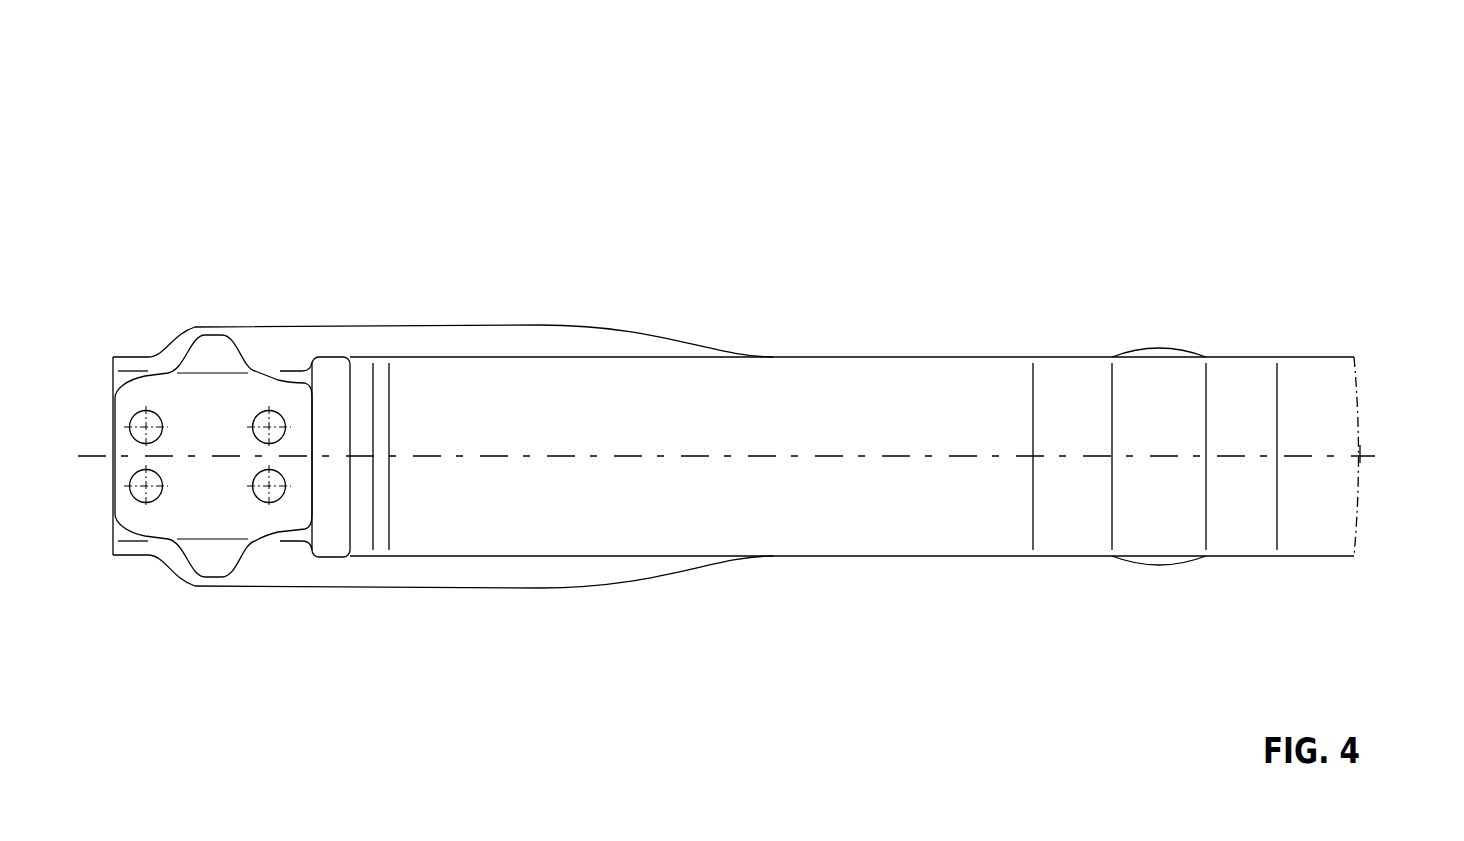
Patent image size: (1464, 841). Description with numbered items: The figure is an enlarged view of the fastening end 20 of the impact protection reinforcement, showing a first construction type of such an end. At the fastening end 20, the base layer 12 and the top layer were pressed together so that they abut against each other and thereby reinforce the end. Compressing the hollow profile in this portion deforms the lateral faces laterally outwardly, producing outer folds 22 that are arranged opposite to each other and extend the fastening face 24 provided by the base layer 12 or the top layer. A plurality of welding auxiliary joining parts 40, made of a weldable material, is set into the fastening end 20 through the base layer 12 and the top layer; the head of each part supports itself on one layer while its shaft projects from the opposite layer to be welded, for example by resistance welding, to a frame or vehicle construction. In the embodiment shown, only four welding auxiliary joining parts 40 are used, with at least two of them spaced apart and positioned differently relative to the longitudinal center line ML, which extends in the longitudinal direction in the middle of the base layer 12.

The base layer 12 is at (857, 533).
The fastening end 20 is at (758, 381).
The outer folds 22 is at (536, 327).
The fastening face 24 is at (230, 490).
The welding auxiliary joining parts 40 is at (275, 422).
The longitudinal center line ML is at (1390, 455).